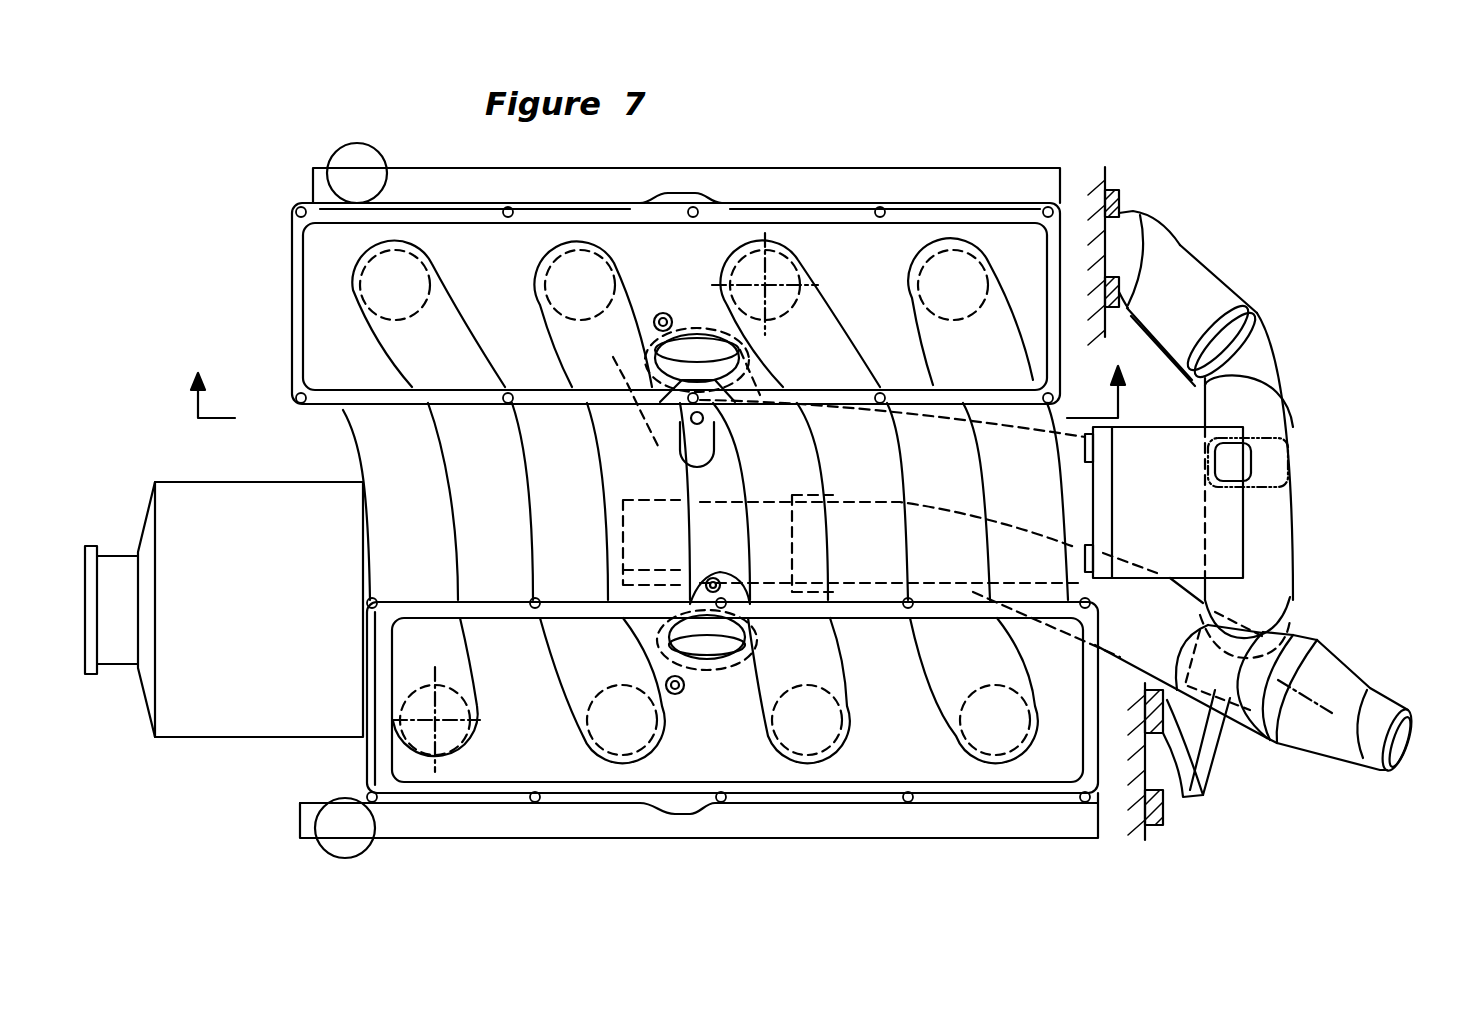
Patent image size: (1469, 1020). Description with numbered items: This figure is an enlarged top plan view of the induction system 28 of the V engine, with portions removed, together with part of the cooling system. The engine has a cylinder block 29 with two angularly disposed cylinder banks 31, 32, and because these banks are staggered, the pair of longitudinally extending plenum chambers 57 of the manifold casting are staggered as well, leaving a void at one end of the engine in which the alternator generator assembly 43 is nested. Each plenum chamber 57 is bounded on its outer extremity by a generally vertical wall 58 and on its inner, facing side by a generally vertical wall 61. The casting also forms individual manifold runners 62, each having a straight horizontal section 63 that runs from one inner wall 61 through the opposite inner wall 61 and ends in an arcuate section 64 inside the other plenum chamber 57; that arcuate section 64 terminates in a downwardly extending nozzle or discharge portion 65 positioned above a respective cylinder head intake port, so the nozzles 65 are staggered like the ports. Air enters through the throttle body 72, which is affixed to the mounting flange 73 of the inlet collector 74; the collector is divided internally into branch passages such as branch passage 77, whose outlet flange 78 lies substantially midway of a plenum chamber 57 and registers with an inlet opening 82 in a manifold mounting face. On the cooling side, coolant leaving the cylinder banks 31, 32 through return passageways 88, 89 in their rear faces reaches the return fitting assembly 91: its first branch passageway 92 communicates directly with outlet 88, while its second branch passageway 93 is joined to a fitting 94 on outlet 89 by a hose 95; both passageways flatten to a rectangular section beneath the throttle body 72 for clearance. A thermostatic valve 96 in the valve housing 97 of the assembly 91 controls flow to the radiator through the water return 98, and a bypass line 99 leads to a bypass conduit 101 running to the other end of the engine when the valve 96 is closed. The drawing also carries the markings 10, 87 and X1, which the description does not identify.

The section line 10- 10 is at (651, 392).
The induction system 28 is at (490, 843).
The cylinder block 29 is at (1030, 480).
The cylinder bank 31 is at (1138, 828).
The cylinder bank 32 is at (1093, 187).
The alternator generator assembly 43 is at (205, 722).
The plenum chamber 57 is at (488, 318).
The vertically extending wall 58 is at (805, 790).
The vertically extending wall 61 is at (510, 590).
The manifold runner 62 is at (482, 496).
The straight horizontally extending section 63 is at (462, 428).
The arcuate section 64 is at (400, 335).
The nozzle or discharge portion 65 is at (370, 290).
The throttle body 72 is at (1230, 548).
The mounting flange 73 is at (1107, 487).
The inlet collector 74 is at (1088, 533).
The branch passage 77 is at (620, 572).
The outlet flange 78 is at (674, 388).
The inlet opening 82 is at (712, 330).
The mounting rail 87 is at (480, 175).
The return passageway 88 is at (1170, 787).
The return passageway 89 is at (1118, 215).
The return fitting assembly 91 is at (1288, 605).
The first branch passageway 92 is at (1200, 787).
The second branch passageway 93 is at (1290, 430).
The fitting 94 is at (1160, 240).
The hose 95 is at (1218, 305).
The thermostatic valve 96 is at (1333, 652).
The valve housing 97 is at (1210, 690).
The water return 98 is at (1307, 730).
The bypass line 99 is at (1113, 657).
The bypass conduit 101 is at (642, 528).
The runner centerline X1 is at (765, 285).